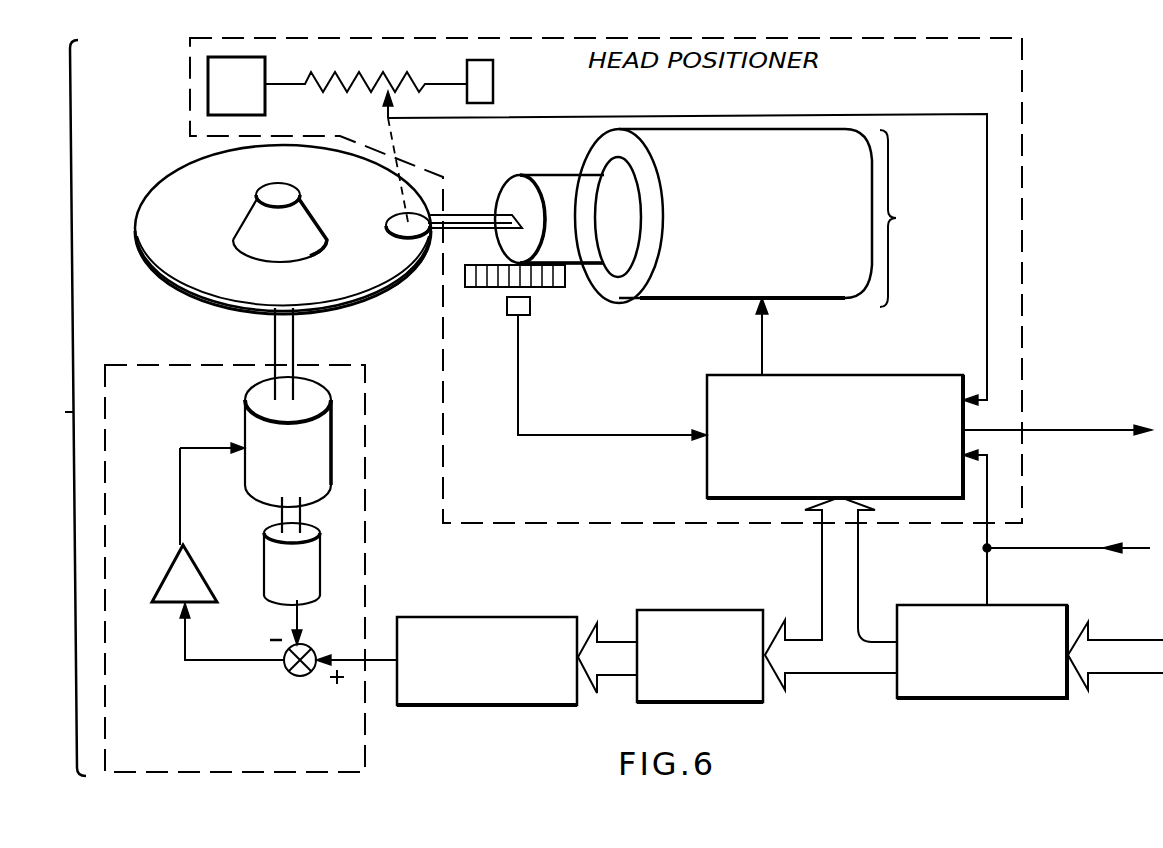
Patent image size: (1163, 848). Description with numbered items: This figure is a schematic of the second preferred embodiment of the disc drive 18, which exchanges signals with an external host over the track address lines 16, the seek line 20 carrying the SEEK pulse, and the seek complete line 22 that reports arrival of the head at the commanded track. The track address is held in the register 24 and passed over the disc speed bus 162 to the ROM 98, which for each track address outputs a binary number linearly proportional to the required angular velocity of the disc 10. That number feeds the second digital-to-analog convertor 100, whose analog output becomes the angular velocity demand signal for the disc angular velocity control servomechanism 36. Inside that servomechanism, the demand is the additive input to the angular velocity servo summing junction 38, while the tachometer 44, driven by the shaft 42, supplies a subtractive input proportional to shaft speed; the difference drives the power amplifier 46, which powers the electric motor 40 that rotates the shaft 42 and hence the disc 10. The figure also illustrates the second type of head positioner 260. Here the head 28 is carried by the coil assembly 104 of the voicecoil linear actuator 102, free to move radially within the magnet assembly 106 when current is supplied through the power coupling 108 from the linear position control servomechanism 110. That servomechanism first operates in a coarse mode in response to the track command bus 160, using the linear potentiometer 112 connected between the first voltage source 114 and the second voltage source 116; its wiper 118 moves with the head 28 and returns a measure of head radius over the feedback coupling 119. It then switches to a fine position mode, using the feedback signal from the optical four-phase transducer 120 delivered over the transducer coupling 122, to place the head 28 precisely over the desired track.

The disc 10 is at (168, 260).
The track address lines 16 is at (1123, 662).
The disc drive 18 is at (59, 408).
The seek line 20 is at (1048, 550).
The seek complete line 22 is at (1085, 430).
The register 24 is at (997, 702).
The head 28 is at (393, 240).
The disc angular velocity control servomechanism 36 is at (362, 720).
The angular velocity servo summing junction 38 is at (312, 648).
The electric motor 40 is at (247, 398).
The shaft 42 is at (283, 347).
The tachometer 44 is at (280, 590).
The power amplifier 46 is at (172, 574).
The ROM 98 is at (733, 703).
The second digital-to-analog convertor 100 is at (487, 705).
The voicecoil linear actuator 102 is at (778, 218).
The coil assembly 104 is at (555, 178).
The magnet assembly 106 is at (622, 129).
The power coupling 108 is at (762, 335).
The linear position control servomechanism 110 is at (707, 385).
The linear potentiometer 112 is at (398, 72).
The first voltage source 114 is at (263, 70).
The second voltage source 116 is at (493, 67).
The wiper 118 is at (388, 118).
The feedback coupling 119 is at (987, 338).
The optical four-phase transducer 120 is at (565, 287).
The transducer coupling 122 is at (518, 403).
The track command bus 160 is at (822, 560).
The disc speed bus 162 is at (783, 660).
The head positioner 260 is at (1012, 218).